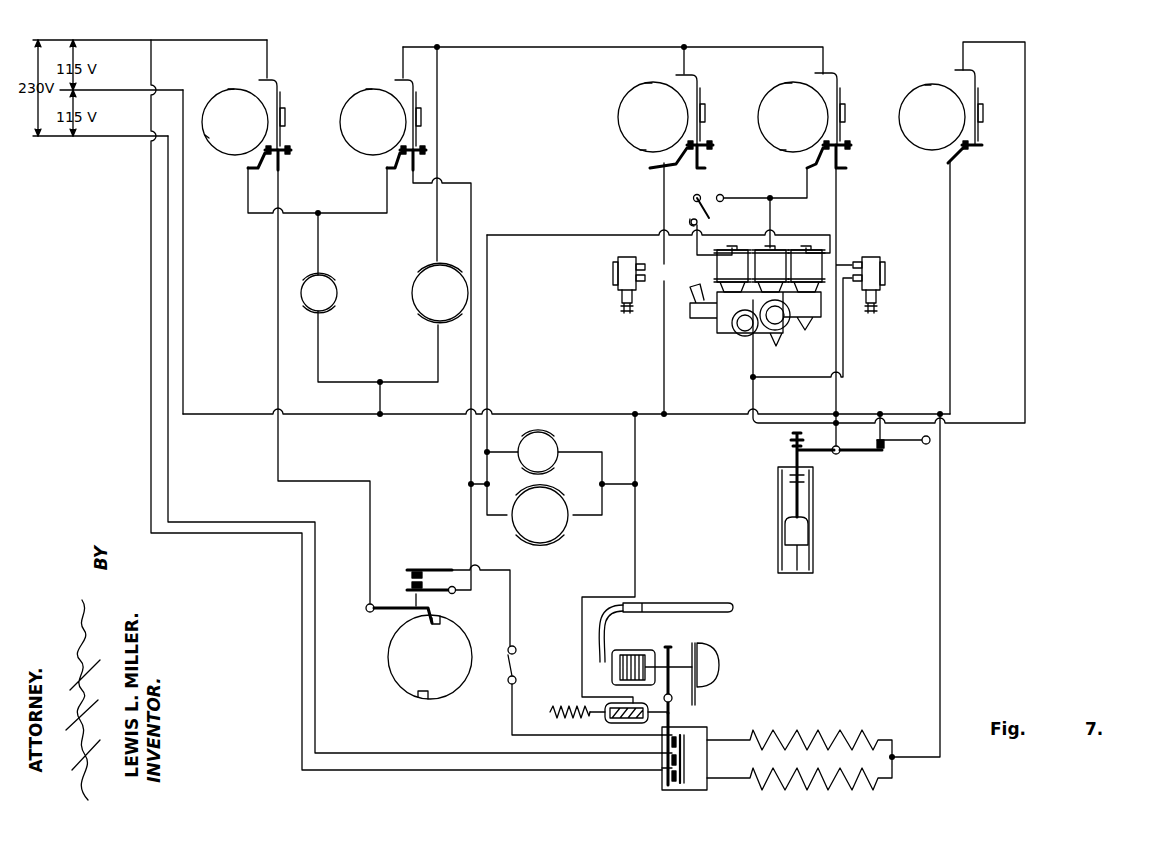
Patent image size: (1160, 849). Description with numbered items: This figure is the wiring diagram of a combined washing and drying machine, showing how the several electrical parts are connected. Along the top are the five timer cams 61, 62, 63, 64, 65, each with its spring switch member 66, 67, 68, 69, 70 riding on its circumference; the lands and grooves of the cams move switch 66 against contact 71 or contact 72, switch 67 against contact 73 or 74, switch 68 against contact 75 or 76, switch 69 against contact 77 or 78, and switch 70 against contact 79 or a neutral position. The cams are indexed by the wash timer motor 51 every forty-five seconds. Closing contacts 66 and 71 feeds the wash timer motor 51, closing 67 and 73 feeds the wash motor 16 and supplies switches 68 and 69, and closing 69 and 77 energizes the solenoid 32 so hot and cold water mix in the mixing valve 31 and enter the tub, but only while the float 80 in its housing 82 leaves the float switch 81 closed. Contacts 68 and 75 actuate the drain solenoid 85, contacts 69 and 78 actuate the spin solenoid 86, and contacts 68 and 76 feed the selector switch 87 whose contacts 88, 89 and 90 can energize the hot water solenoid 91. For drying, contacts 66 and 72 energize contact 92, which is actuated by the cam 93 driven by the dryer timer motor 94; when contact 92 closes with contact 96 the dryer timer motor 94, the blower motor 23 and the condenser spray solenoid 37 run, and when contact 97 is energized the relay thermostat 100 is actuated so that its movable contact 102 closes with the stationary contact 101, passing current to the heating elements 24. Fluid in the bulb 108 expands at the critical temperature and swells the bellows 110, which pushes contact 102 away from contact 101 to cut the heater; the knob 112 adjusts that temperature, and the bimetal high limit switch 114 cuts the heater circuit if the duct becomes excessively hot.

The electric motor 16 is at (420, 288).
The blower motor 23 is at (540, 534).
The electric heating elements 24 is at (803, 733).
The mixing valve 31 is at (728, 318).
The solenoid 32 is at (770, 269).
The condenser spray solenoid 37 is at (806, 269).
The wash timer motor 51 is at (333, 293).
The cam 61 is at (238, 90).
The cam 62 is at (376, 90).
The cam 63 is at (656, 84).
The cam 64 is at (798, 84).
The cam 65 is at (940, 85).
The spring switch member 66 is at (282, 92).
The spring switch member 67 is at (416, 92).
The spring switch member 68 is at (702, 88).
The spring switch member 69 is at (842, 88).
The spring switch member 70 is at (980, 88).
The contact 71 is at (250, 168).
The contact 72 is at (281, 164).
The contact 73 is at (388, 168).
The contact 74 is at (414, 172).
The contact 75 is at (652, 168).
The contact 76 is at (706, 168).
The contact 77 is at (808, 168).
The contact 78 is at (845, 168).
The contact 79 is at (949, 163).
The float 80 is at (803, 530).
The float switch 81 is at (884, 450).
The float housing 82 is at (813, 553).
The drain solenoid 85 is at (613, 270).
The spin solenoid 86 is at (885, 272).
The selector switch 87 is at (692, 205).
The contact 88 is at (714, 212).
The contact 89 is at (689, 222).
The contact 90 is at (724, 196).
The hot water solenoid 91 is at (732, 269).
The contact 92 is at (400, 610).
The cam 93 is at (400, 676).
The dryer timer motor 94 is at (544, 442).
The contact 96 is at (407, 590).
The contact 97 is at (407, 570).
The relay thermostat 100 is at (628, 724).
The stationary contact 101 is at (668, 783).
The movable contact 102 is at (686, 766).
The bulb 108 is at (729, 608).
The bellows 110 is at (628, 650).
The knob 112 is at (712, 668).
The high limit switch 114 is at (516, 664).